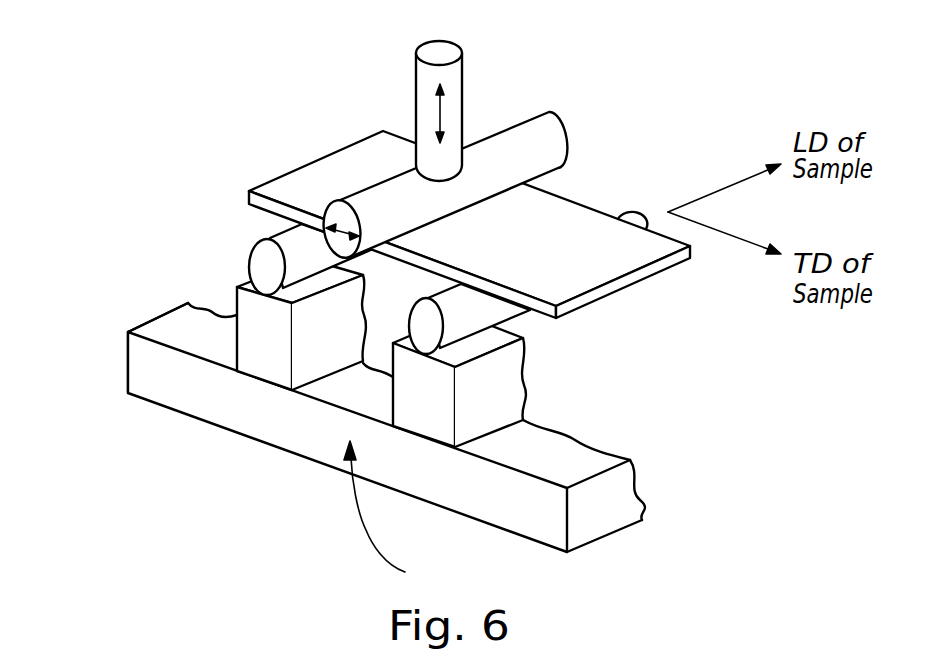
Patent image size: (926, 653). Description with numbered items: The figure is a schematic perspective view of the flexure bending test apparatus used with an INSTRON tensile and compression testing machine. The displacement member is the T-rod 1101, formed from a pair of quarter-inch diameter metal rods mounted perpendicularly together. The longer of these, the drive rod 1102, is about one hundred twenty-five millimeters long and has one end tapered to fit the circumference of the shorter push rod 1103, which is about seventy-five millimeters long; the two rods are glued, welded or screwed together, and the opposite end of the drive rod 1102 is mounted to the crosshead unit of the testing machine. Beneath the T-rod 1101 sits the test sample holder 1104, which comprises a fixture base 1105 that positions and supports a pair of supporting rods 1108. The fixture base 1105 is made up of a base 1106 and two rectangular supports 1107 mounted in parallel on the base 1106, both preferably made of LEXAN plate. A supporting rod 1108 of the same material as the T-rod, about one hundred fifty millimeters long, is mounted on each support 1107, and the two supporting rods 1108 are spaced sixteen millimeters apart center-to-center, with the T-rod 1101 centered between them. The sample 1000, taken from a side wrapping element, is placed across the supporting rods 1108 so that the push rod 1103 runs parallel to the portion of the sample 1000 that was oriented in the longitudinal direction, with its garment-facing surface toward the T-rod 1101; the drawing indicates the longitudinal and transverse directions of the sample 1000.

The sample 1000 is at (597, 270).
The T-rod 1101 is at (405, 95).
The drive rod 1102 is at (465, 72).
The push rod 1103 is at (560, 128).
The test sample holder 1104 is at (405, 572).
The fixture base 1105 is at (308, 448).
The base 1106 is at (142, 365).
The rectangular supports 1107 is at (248, 308).
The supporting rods 1108 is at (264, 267).